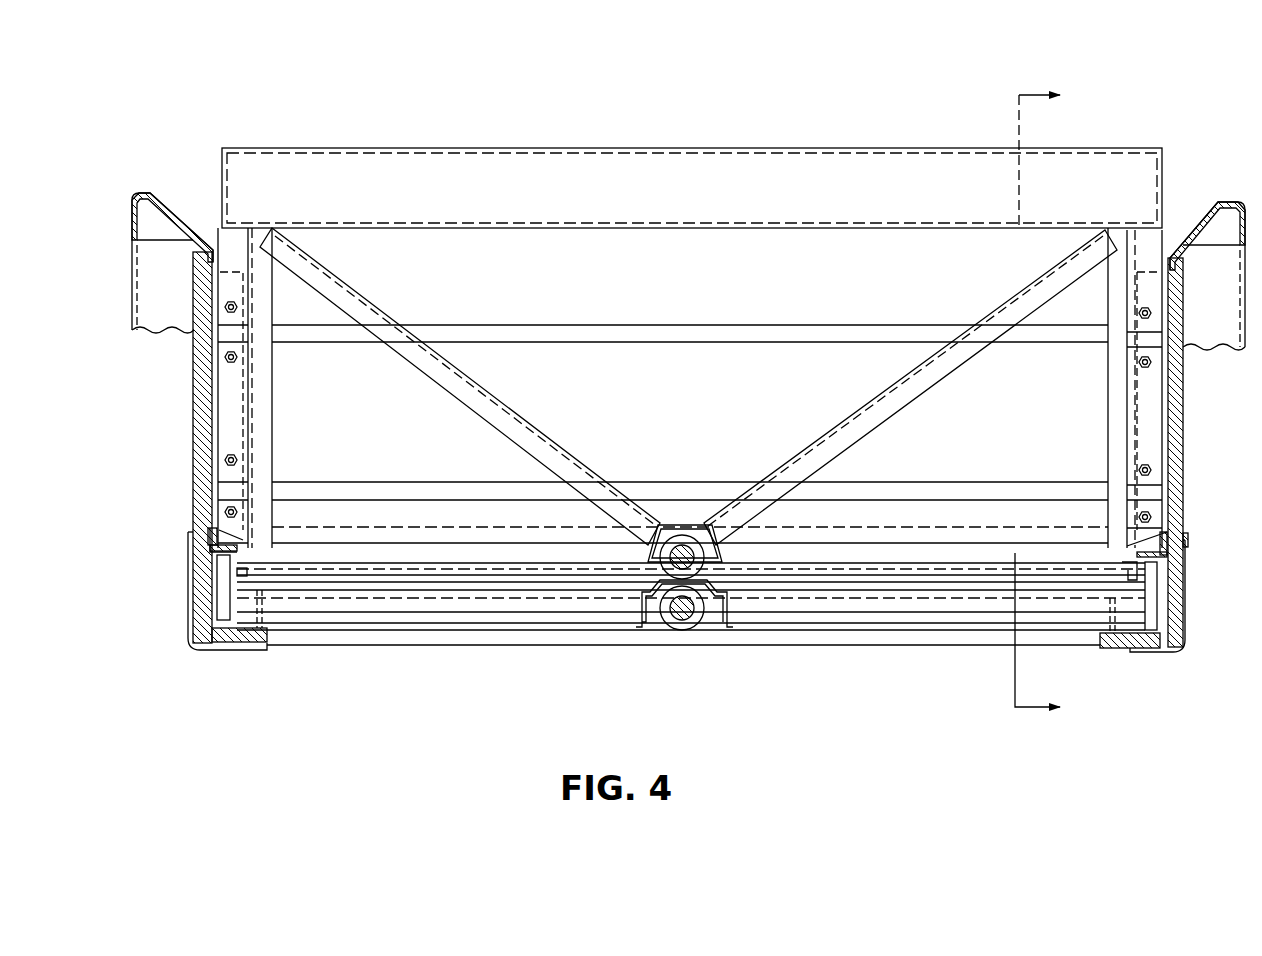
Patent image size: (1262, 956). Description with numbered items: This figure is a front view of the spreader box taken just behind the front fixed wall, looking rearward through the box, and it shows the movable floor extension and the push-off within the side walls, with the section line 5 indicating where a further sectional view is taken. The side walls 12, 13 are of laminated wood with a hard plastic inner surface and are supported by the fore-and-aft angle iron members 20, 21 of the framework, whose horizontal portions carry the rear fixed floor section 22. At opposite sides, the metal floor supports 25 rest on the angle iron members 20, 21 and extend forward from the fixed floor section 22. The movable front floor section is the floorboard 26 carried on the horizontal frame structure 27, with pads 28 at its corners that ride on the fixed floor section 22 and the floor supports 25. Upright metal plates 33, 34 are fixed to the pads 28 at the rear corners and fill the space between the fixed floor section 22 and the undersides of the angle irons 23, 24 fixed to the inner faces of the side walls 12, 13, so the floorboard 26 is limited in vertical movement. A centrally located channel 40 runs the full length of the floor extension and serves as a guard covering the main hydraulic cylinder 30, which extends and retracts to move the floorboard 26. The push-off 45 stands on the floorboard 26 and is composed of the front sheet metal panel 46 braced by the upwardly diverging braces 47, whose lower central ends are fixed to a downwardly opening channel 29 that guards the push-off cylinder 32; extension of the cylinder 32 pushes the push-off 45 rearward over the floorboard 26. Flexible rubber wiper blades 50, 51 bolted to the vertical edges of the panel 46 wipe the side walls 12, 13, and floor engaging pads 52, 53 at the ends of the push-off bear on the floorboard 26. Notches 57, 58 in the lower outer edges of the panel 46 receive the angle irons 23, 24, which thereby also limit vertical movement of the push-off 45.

The section line 5- 5 is at (1052, 400).
The side wall 12 is at (1183, 438).
The side wall 13 is at (203, 429).
The angle iron member 20 is at (1190, 596).
The angle iron member 21 is at (190, 596).
The rear fixed floor section 22 is at (283, 632).
The angle iron 23 is at (1130, 548).
The angle iron 24 is at (212, 546).
The floor support 25 is at (256, 642).
The floorboard 26 is at (780, 587).
The frame structure 27 is at (890, 607).
The pad 28 is at (240, 631).
The channel 29 is at (688, 534).
The main hydraulic cylinder 30 is at (700, 624).
The push-off cylinder 32 is at (678, 526).
The upright metal plate 33 is at (1151, 613).
The upright metal plate 34 is at (222, 598).
The channel 40 is at (652, 600).
The push-off 45 is at (565, 146).
The front sheet metal panel 46 is at (709, 398).
The brace 47 is at (558, 456).
The wiper blade 50 is at (1163, 394).
The wiper blade 51 is at (218, 376).
The floor engaging pad 52 is at (1140, 592).
The floor engaging pad 53 is at (245, 575).
The notch 57 is at (1180, 545).
The recess 58 is at (207, 531).